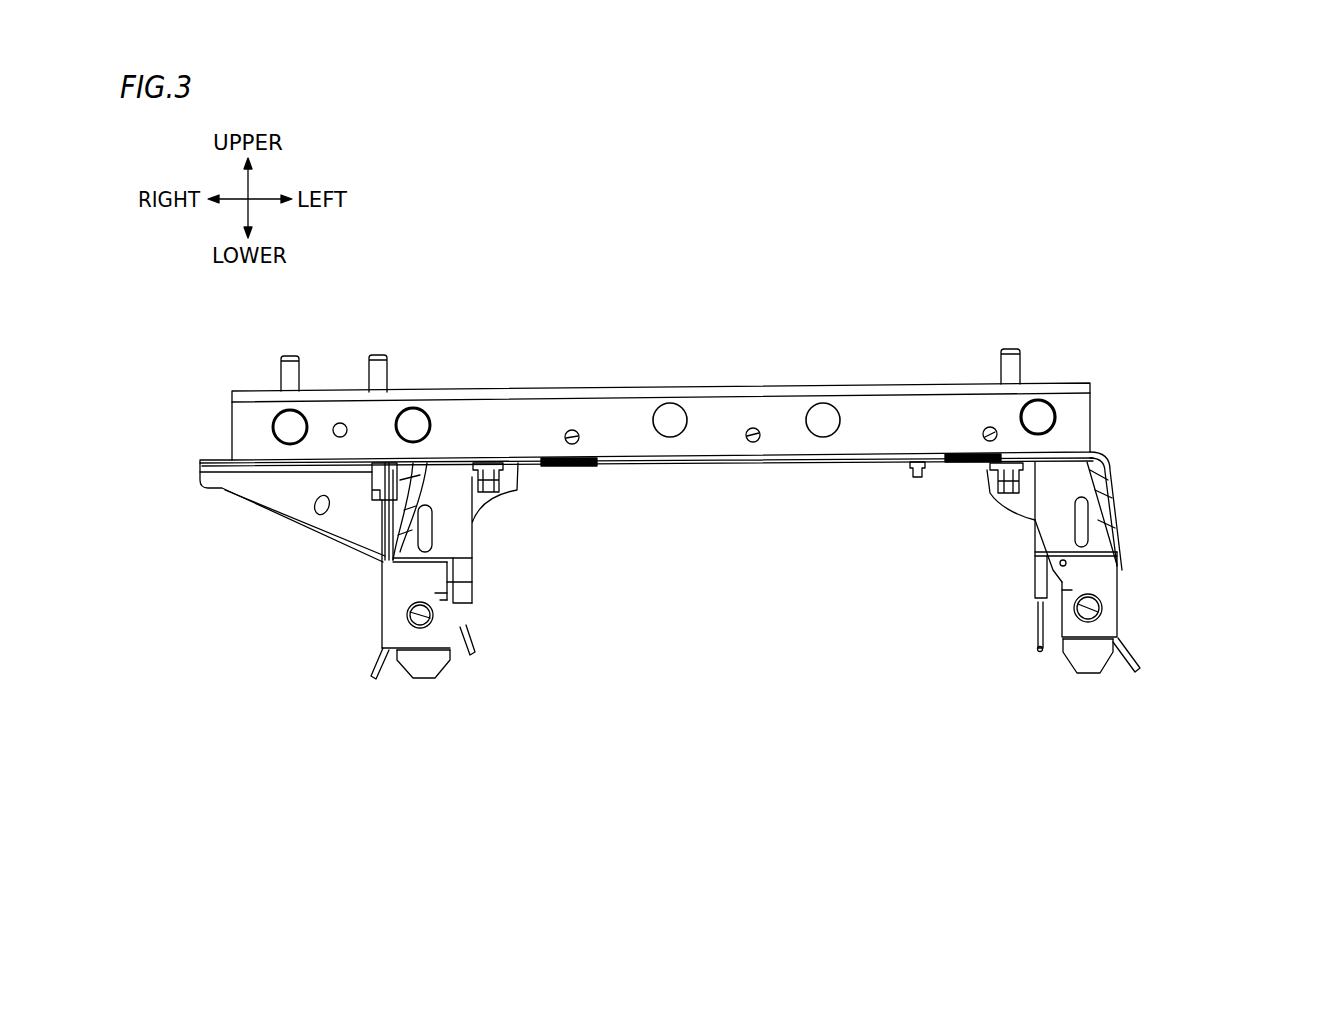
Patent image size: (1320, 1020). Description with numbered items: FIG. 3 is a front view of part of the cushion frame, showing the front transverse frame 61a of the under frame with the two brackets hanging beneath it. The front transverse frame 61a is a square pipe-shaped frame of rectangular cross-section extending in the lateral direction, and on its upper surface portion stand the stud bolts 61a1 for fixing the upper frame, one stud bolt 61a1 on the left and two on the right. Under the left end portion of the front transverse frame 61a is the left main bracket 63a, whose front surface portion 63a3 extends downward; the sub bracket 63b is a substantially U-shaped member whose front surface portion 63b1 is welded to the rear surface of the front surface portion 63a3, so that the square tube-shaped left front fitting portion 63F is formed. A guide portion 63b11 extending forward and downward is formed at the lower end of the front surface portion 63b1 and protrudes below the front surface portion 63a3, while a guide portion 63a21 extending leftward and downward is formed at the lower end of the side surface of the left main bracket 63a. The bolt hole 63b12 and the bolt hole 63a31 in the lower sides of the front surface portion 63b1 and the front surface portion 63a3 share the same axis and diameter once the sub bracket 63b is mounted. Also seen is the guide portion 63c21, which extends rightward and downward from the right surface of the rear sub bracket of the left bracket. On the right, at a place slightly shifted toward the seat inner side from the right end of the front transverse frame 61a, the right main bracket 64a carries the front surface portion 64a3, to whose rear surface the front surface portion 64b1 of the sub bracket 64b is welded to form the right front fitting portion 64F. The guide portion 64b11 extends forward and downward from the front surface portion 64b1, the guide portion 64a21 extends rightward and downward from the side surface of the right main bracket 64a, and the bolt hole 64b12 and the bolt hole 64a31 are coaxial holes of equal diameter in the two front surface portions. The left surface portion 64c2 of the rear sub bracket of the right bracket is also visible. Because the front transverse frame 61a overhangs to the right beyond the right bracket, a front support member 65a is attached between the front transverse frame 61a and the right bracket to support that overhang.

The front transverse frame 61a is at (715, 385).
The stud bolt 61a1 is at (290, 356).
The front support member 65a is at (230, 495).
The right front fitting portion 64F is at (483, 528).
The right main bracket 64a is at (397, 537).
The sub bracket 64b is at (473, 573).
The front surface portion 64b1 is at (457, 587).
The front surface portion 64a3 is at (435, 593).
The bolt hole 64a31 is at (408, 611).
The bolt hole 64b12 is at (408, 611).
The guide portion 64a21 is at (380, 655).
The left surface portion 64c2 is at (460, 613).
The guide portion 64b11 is at (425, 680).
The left front fitting portion 63F is at (1027, 522).
The left main bracket 63a is at (1105, 507).
The sub bracket 63b is at (1035, 563).
The front surface portion 63b1 is at (1052, 582).
The front surface portion 63a3 is at (1077, 587).
The bolt hole 63a31 is at (1101, 604).
The bolt hole 63b12 is at (1101, 604).
The guide portion 63a21 is at (1140, 646).
The guide portion 63c21 is at (1038, 650).
The guide portion 63b11 is at (1087, 675).